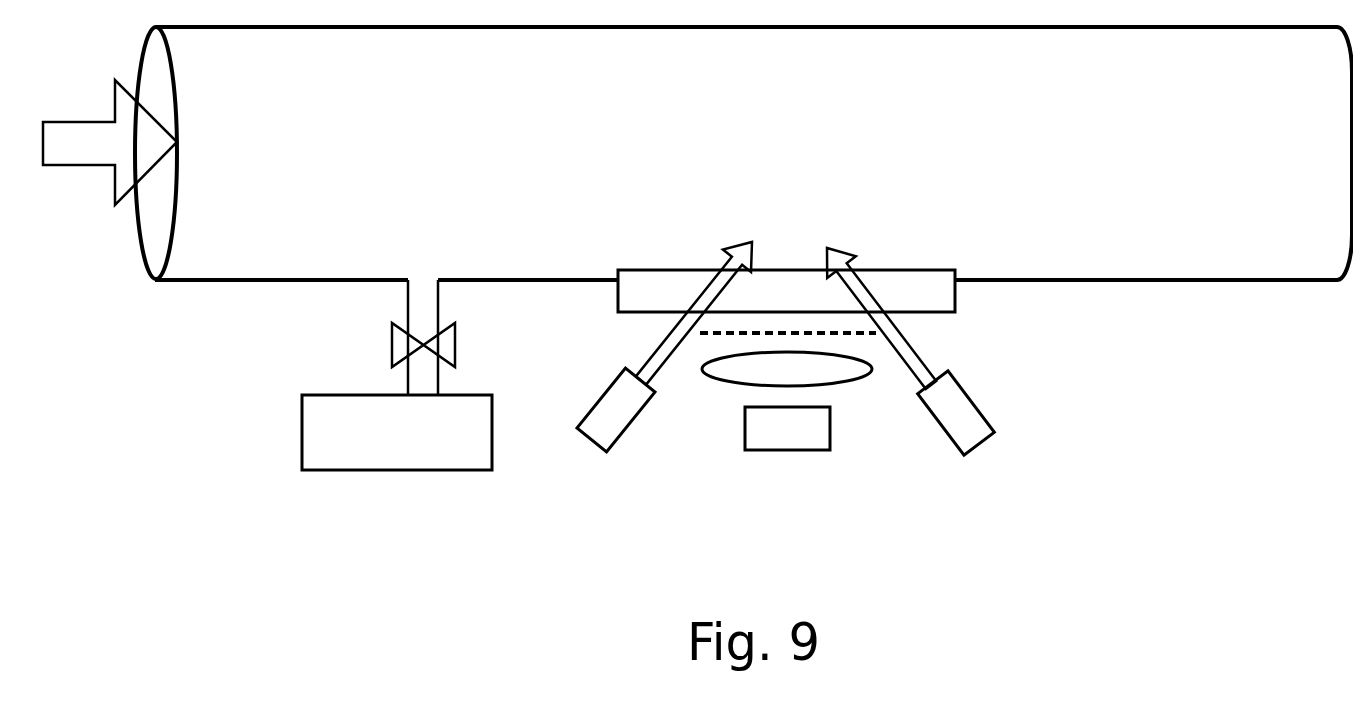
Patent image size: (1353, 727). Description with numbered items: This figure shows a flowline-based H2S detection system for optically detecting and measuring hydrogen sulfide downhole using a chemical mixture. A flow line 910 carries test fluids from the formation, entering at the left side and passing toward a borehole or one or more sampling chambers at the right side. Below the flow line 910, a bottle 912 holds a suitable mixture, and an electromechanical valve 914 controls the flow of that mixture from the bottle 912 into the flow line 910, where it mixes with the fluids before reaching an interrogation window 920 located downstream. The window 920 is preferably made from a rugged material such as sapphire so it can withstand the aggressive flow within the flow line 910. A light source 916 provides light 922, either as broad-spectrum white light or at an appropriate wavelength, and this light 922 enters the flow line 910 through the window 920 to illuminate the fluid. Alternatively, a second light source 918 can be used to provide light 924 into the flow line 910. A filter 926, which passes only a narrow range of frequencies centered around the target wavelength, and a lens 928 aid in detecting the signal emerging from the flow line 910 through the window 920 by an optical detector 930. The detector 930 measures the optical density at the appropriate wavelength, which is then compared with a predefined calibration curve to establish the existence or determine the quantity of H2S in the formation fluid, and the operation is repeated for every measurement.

The flow line 910 is at (697, 153).
The bottle 912 is at (397, 375).
The electromechanical valve 914 is at (455, 348).
The light source 916 is at (605, 428).
The light source 918 is at (952, 398).
The interrogation window 920 is at (786, 291).
The light 922 is at (675, 337).
The light 924 is at (895, 333).
The filter 926 is at (717, 335).
The lens 928 is at (853, 382).
The optical detector 930 is at (787, 428).